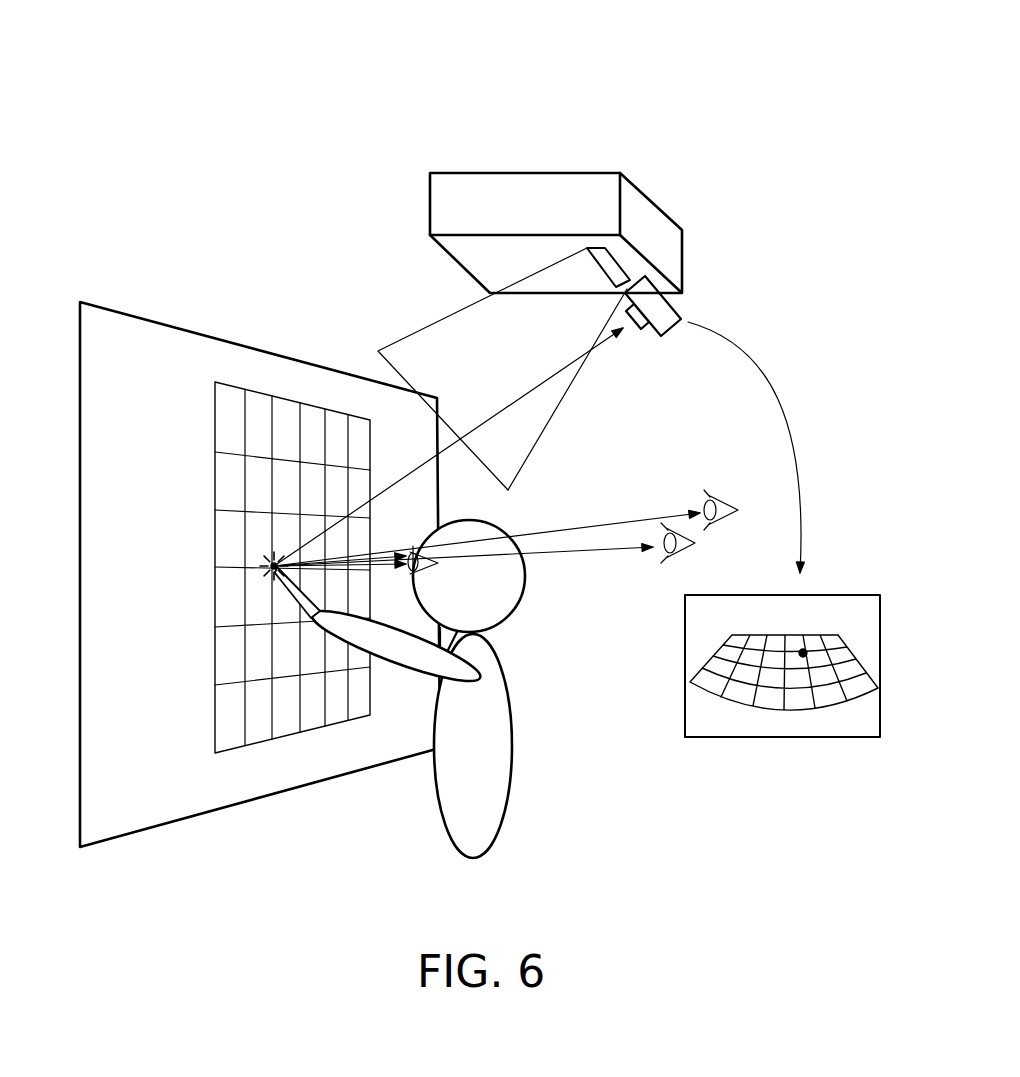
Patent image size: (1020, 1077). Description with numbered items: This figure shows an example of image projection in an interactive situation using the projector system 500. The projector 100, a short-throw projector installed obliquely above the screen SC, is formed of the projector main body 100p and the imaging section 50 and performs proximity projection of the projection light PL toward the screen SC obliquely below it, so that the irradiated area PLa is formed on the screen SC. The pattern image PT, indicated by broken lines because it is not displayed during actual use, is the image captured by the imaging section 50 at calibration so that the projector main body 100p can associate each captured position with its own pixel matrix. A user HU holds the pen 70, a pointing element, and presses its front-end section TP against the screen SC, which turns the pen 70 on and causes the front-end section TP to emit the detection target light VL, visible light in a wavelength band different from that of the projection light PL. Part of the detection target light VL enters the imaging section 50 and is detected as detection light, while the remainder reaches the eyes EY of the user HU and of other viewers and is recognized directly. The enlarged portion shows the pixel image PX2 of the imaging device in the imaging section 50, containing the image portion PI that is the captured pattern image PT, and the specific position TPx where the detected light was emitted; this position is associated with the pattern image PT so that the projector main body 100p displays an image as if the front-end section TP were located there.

The projector system 500 is at (590, 174).
The projector 100 is at (556, 185).
The projector main body 100p is at (595, 187).
The imaging section 50 is at (672, 314).
The screen SC is at (182, 340).
The irradiated area PLa is at (303, 581).
The pattern image PT is at (305, 720).
The front-end section TP is at (272, 572).
The pen 70 is at (300, 603).
The user HU is at (497, 715).
The eyes EY is at (723, 518).
The detection target light VL is at (388, 550).
The projection light PL is at (552, 403).
The pixel image PX2 is at (782, 735).
The image portion PI is at (770, 708).
The specific position TPx is at (817, 708).